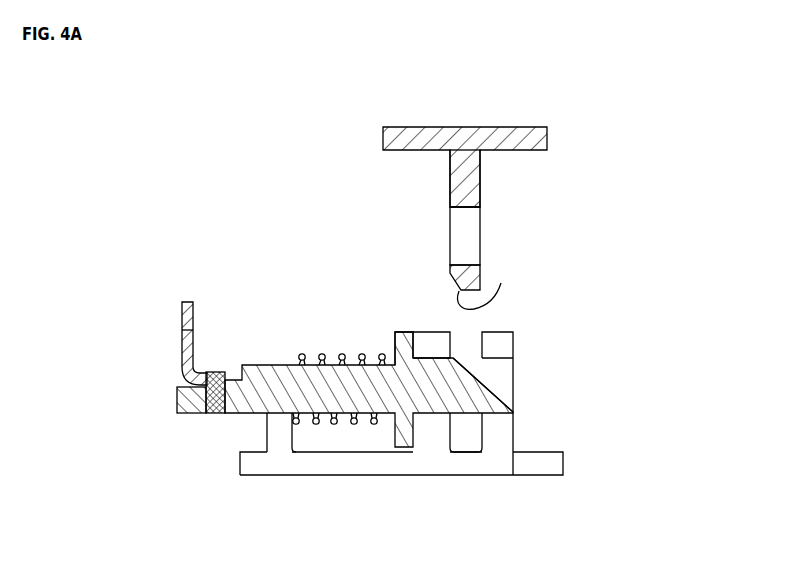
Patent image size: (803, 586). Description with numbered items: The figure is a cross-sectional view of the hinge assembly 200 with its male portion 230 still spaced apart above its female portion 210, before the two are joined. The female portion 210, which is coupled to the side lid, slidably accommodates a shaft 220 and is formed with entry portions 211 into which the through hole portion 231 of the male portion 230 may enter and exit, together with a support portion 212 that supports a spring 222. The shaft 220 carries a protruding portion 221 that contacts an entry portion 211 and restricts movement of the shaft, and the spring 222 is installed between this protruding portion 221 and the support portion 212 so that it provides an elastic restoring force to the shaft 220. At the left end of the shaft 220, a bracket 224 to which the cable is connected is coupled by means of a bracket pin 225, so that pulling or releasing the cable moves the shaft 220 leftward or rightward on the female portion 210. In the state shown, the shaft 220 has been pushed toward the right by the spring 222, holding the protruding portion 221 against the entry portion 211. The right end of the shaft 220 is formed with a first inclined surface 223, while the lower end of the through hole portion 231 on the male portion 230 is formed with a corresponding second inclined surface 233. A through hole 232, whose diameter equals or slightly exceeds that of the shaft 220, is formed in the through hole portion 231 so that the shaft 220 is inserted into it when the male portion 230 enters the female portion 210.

The hinge assembly 200 is at (657, 101).
The female portion 210 is at (345, 462).
The entry portion 211 is at (488, 433).
The support portion 212 is at (279, 432).
The shaft 220 is at (331, 383).
The protruding portion 221 is at (404, 332).
The spring 222 is at (302, 352).
The first inclined surface 223 is at (470, 372).
The bracket 224 is at (183, 347).
The bracket pin 225 is at (214, 413).
The male portion 230 is at (458, 134).
The through hole portion 231 is at (471, 181).
The through hole 232 is at (468, 240).
The second inclined surface 233 is at (501, 283).